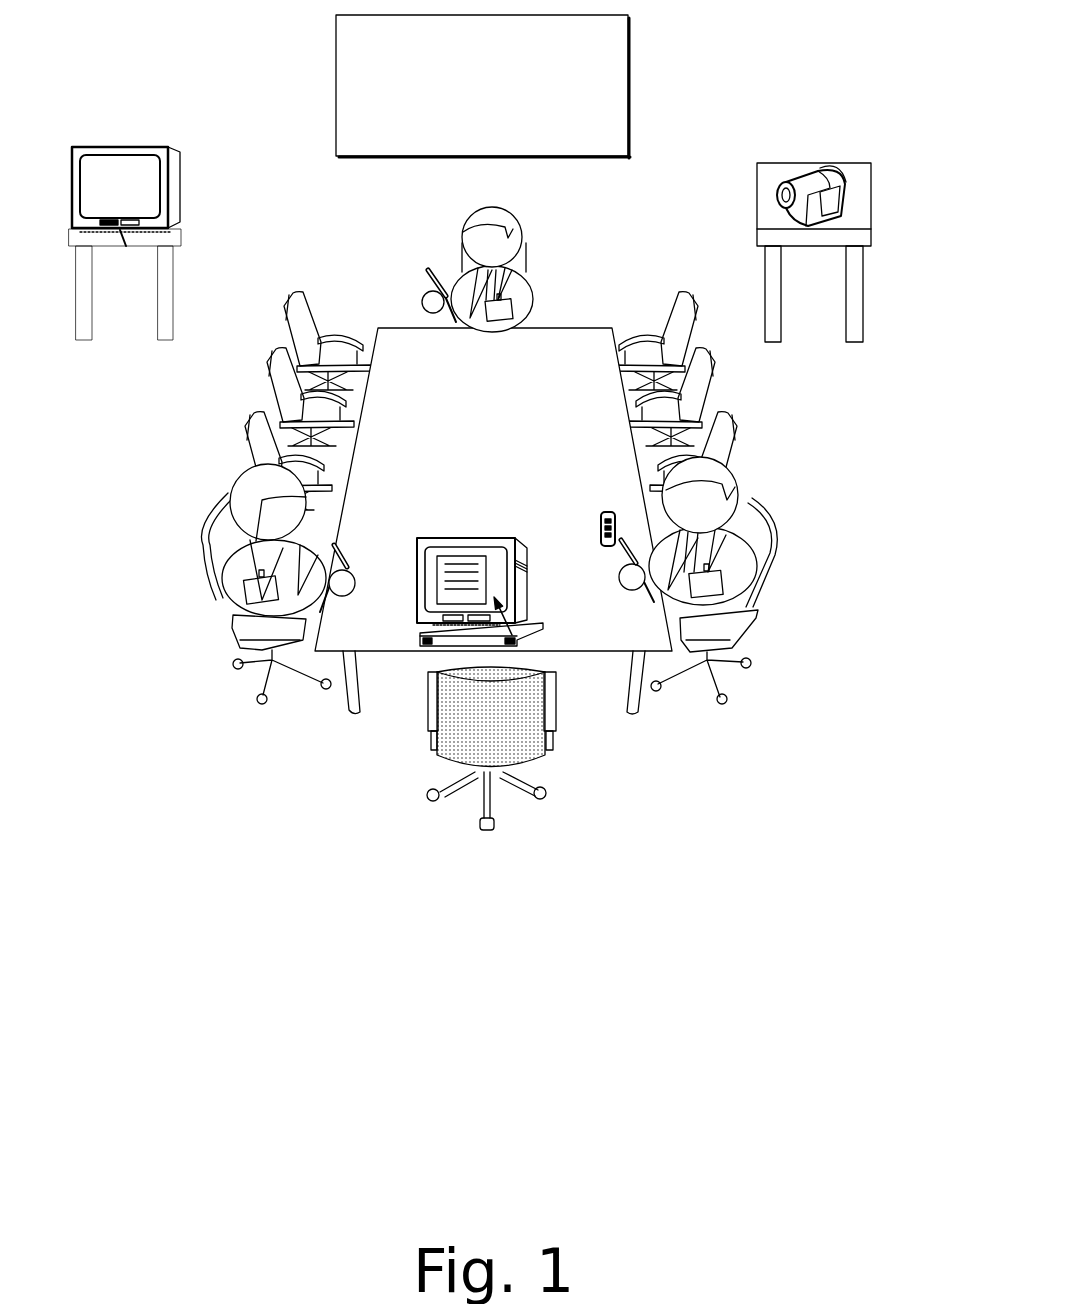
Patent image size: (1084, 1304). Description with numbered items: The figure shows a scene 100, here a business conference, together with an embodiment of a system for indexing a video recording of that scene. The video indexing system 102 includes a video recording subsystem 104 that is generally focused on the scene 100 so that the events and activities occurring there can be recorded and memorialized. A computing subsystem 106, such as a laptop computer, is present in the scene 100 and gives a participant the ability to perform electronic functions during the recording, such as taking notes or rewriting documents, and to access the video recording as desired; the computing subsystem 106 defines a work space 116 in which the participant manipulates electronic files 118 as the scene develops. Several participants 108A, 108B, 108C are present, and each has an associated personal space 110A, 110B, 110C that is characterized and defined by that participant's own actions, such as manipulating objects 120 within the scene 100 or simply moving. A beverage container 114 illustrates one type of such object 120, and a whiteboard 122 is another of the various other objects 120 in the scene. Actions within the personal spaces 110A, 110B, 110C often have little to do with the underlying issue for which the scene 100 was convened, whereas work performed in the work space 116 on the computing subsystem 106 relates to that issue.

The scene 100 is at (745, 75).
The video indexing system 102 is at (162, 105).
The video recording subsystem 104 is at (814, 163).
The computing subsystem 106 is at (433, 538).
The participant 108A is at (722, 420).
The participant 108B is at (490, 208).
The participant 108C is at (292, 472).
The personal space 110A is at (752, 485).
The personal space 110B is at (533, 240).
The personal space 110C is at (338, 482).
The beverage container 114 is at (603, 510).
The work space 116 is at (504, 620).
The electronic files 118 is at (478, 556).
The objects 120 is at (466, 96).
The whiteboard 122 is at (630, 128).